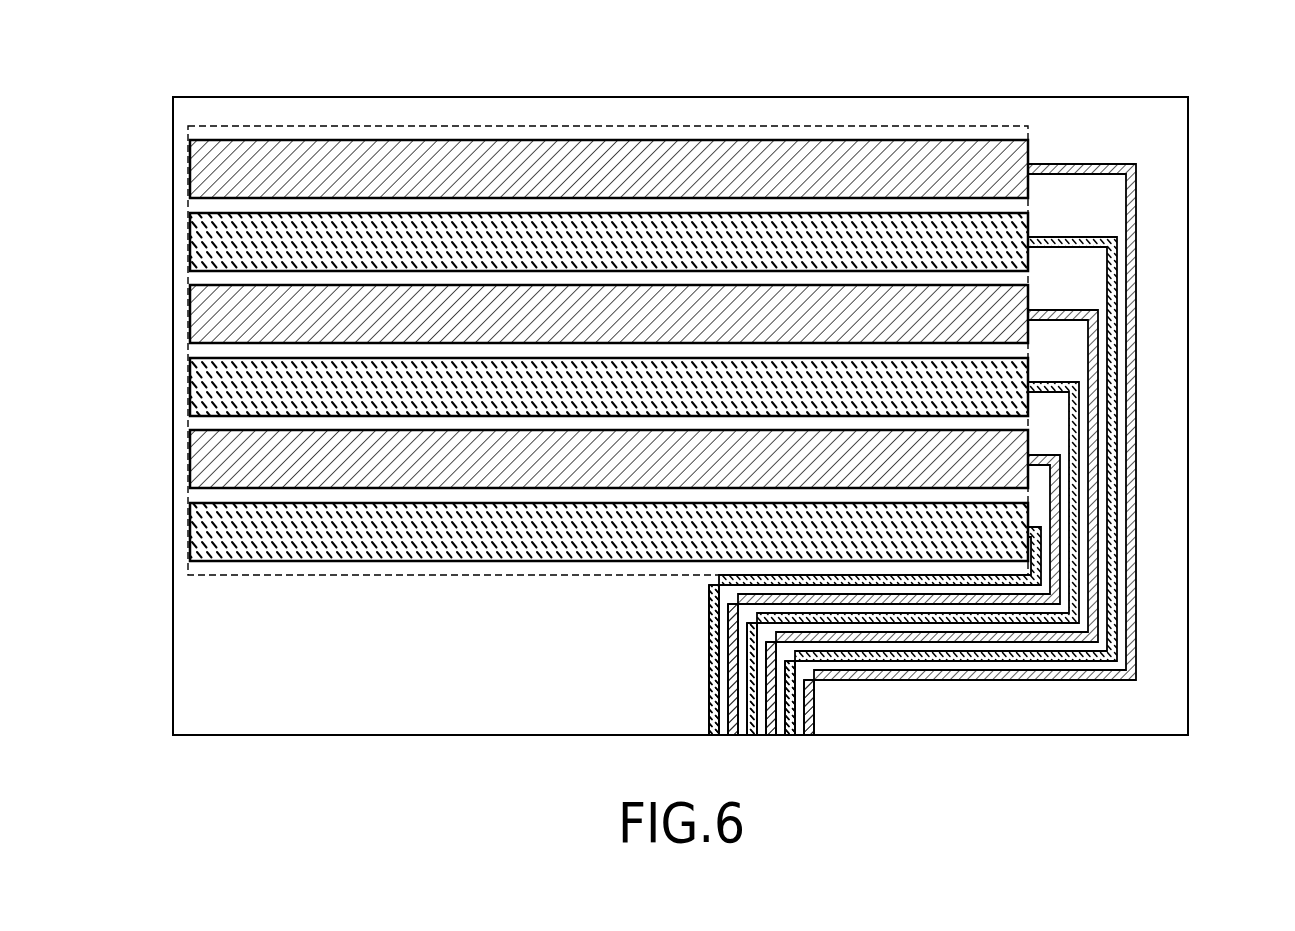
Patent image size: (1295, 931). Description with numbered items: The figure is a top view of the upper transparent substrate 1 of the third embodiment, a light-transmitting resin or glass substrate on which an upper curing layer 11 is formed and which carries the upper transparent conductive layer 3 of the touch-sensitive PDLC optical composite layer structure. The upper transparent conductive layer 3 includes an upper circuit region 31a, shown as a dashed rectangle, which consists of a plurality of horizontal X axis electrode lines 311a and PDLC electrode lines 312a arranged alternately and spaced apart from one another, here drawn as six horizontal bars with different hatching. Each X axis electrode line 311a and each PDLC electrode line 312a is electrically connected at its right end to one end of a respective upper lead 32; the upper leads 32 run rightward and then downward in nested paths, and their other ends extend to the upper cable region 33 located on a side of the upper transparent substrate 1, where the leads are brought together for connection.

The upper transparent substrate 1 is at (1135, 97).
The upper curing layer 11 is at (1172, 132).
The upper transparent conductive layer 3 is at (744, 108).
The upper circuit region 31a is at (909, 125).
The horizontal X axis electrode lines 311a is at (194, 166).
The PDLC electrode lines 312a is at (194, 239).
The upper leads 32 is at (1137, 210).
The upper cable region 33 is at (709, 682).